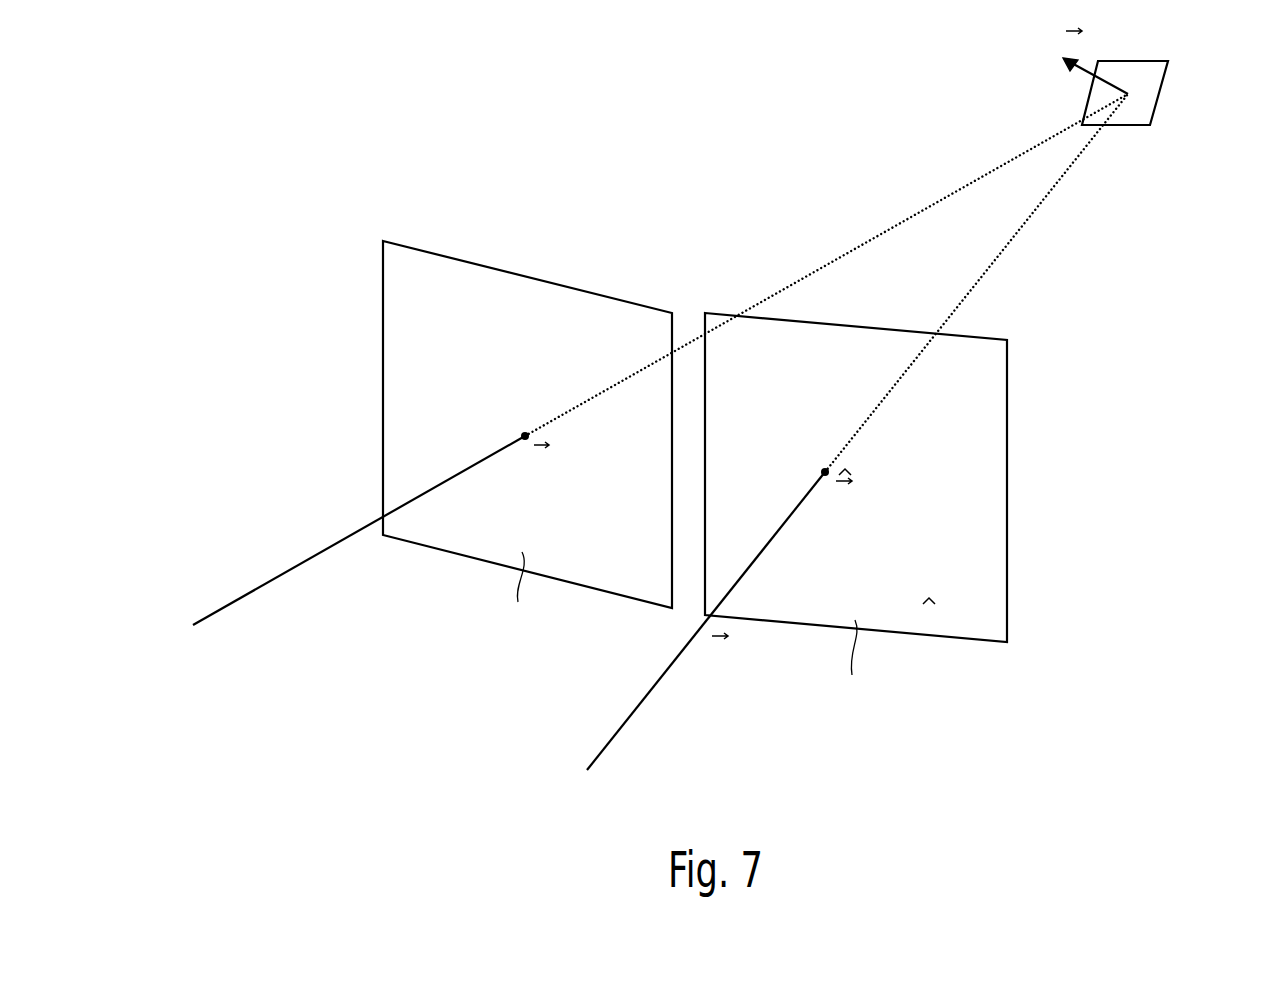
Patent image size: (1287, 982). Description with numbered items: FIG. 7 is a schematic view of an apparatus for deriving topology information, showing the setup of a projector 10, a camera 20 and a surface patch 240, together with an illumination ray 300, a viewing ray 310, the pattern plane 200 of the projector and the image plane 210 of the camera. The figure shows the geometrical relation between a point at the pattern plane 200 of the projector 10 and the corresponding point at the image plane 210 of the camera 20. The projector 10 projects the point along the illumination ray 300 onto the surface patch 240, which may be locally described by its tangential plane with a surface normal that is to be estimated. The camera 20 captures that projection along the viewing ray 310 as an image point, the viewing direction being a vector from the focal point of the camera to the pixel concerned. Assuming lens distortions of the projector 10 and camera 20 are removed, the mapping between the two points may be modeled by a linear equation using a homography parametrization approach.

The projector 10 is at (324, 548).
The camera 20 is at (831, 637).
The pattern plane 200 is at (383, 289).
The image plane 210 is at (1007, 400).
The surface patch 240 is at (1161, 88).
The illumination ray 300 is at (862, 245).
The viewing ray 310 is at (1022, 227).